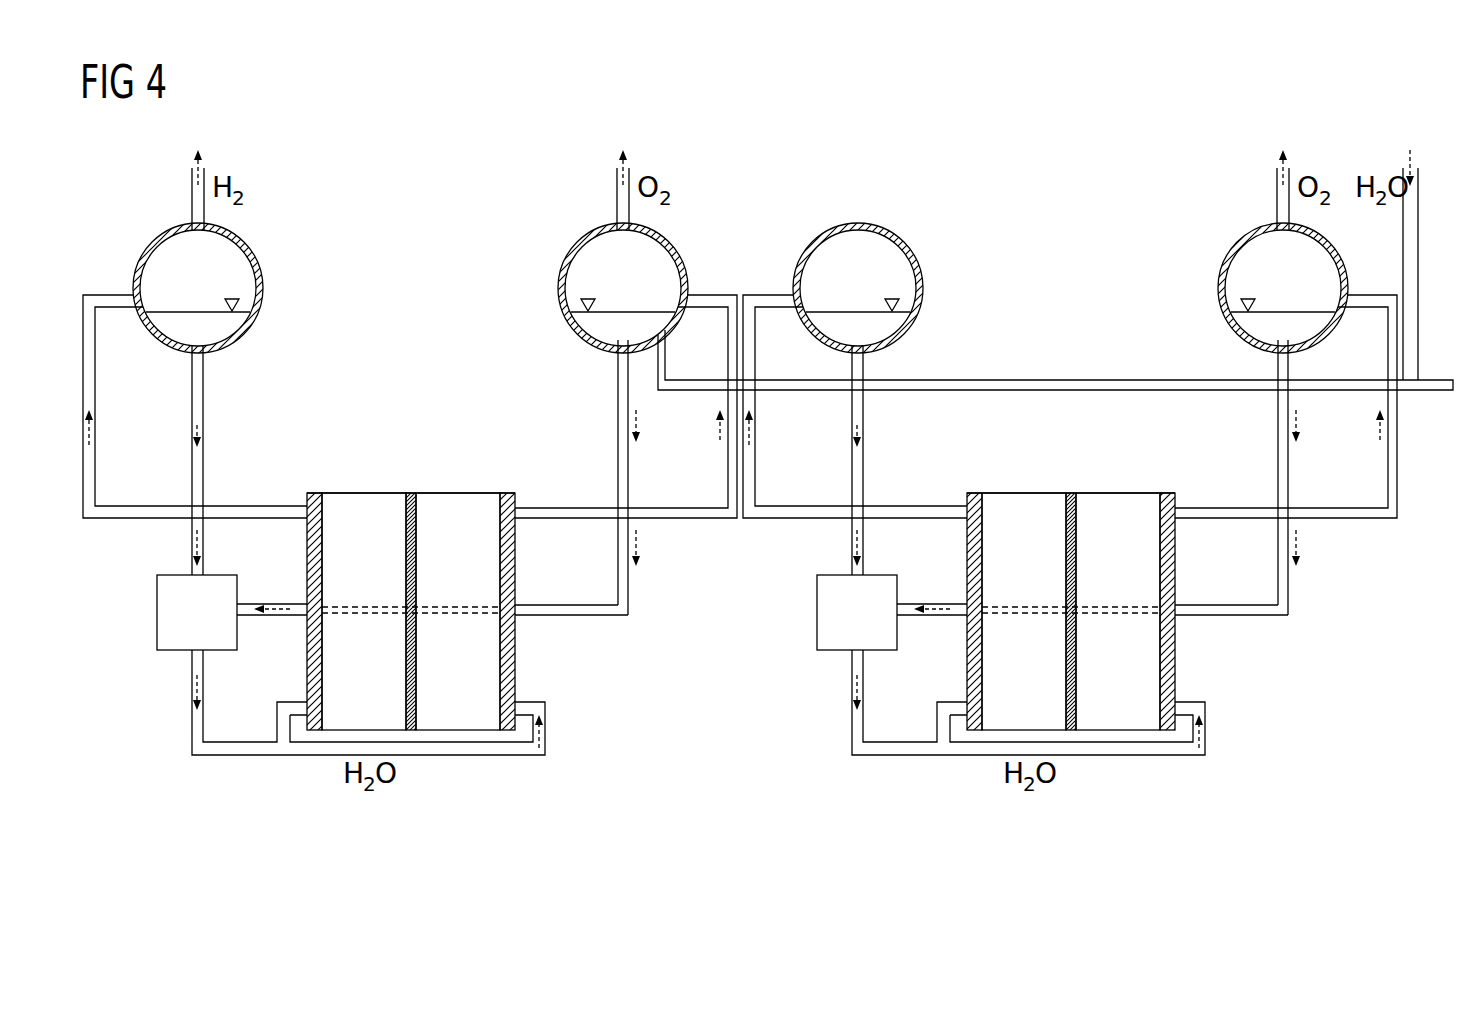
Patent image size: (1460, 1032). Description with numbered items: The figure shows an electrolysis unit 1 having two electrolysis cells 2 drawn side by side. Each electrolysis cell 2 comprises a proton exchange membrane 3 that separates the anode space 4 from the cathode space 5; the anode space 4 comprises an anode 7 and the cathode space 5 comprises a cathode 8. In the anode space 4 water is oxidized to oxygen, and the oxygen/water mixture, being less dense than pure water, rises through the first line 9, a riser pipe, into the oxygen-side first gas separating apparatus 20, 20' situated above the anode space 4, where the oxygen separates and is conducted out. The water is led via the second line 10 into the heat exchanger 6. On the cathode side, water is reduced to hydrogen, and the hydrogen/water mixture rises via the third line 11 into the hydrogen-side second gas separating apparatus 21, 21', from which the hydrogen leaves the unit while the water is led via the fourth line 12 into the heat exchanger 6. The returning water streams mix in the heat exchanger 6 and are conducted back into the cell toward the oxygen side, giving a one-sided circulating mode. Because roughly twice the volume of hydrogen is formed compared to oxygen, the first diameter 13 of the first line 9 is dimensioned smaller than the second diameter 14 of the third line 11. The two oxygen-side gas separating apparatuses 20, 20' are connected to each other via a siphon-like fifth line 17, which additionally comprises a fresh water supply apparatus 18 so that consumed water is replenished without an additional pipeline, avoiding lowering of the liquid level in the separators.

The electrolysis unit 1 is at (1290, 824).
The electrolysis cell 2 is at (452, 492).
The proton exchange membrane 3 is at (408, 492).
The anode space 4 is at (467, 567).
The cathode space 5 is at (373, 567).
The heat exchanger 6 is at (207, 628).
The anode 7 is at (504, 492).
The cathode 8 is at (312, 492).
The first line 9 is at (703, 520).
The second line 10 is at (630, 596).
The third line 11 is at (97, 380).
The fourth line 12 is at (205, 380).
The first diameter 13 is at (592, 463).
The second diameter 14 is at (165, 463).
The fifth line 17 is at (1074, 380).
The fresh water supply apparatus 18 is at (1403, 233).
The first gas separating apparatus 20 is at (586, 288).
The first gas separating apparatus 20' is at (1243, 288).
The second gas separating apparatus 21 is at (237, 288).
The second gas separating apparatus 21' is at (901, 288).